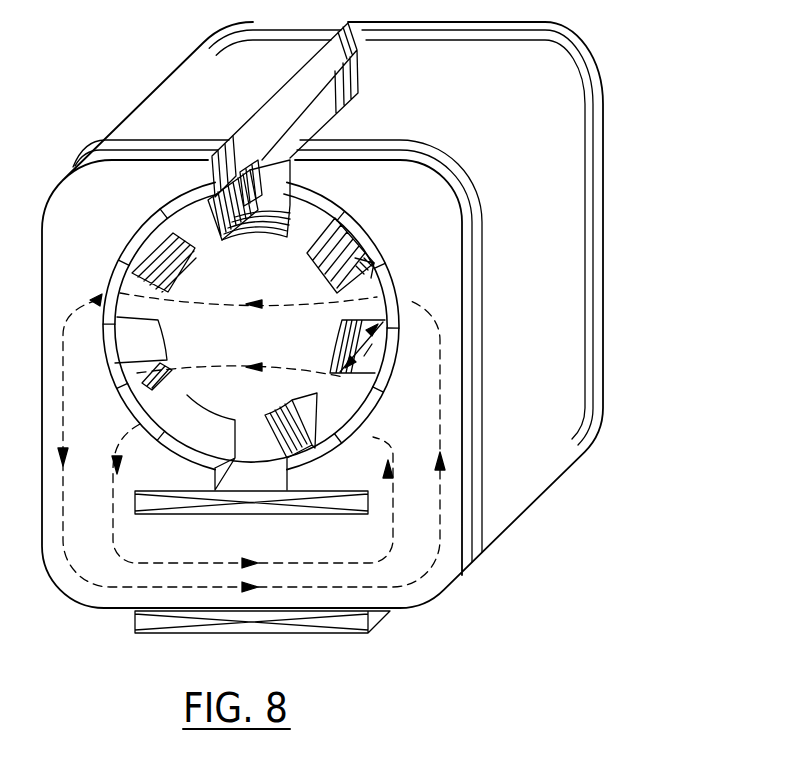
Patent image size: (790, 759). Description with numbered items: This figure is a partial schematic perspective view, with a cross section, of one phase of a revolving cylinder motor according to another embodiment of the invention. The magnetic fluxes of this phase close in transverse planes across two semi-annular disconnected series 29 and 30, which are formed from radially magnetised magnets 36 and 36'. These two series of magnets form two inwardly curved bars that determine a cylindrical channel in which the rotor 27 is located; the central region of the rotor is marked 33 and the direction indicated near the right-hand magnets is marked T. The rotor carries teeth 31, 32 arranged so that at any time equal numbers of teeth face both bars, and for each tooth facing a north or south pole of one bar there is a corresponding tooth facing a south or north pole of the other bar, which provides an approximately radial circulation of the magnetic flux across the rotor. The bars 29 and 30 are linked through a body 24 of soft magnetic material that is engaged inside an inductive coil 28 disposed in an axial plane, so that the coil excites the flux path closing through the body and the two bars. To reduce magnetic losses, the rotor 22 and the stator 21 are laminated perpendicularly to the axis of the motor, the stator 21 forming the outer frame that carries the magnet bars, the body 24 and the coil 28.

The stator 21 is at (608, 129).
The rotor 22 is at (325, 262).
The body of soft magnetic material 24 is at (262, 542).
The rotor 27 is at (160, 342).
The inductive coil 28 is at (128, 622).
The semi-annular disconnected series of magnets 29 is at (130, 237).
The semi-annular disconnected series of magnets 30 is at (372, 243).
The tooth 31 is at (150, 376).
The tooth 32 is at (375, 266).
The rotor 33 is at (261, 278).
The radially magnetised magnet 36 is at (428, 327).
The radially magnetised magnet 36' is at (436, 347).
The torque direction T is at (396, 372).